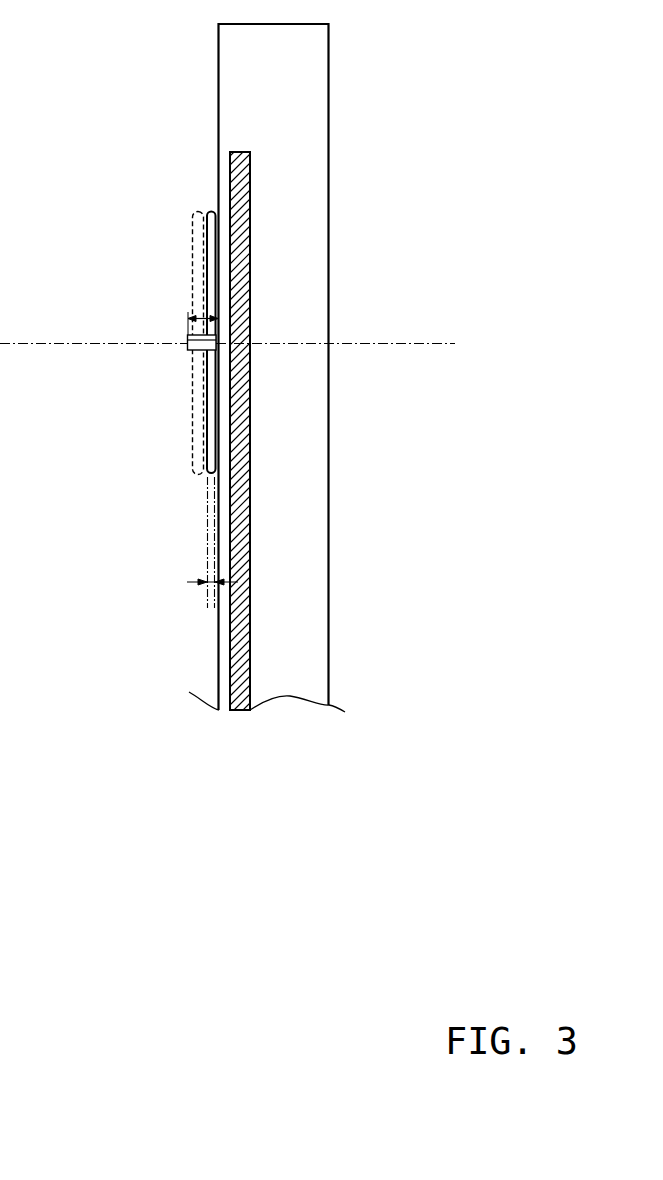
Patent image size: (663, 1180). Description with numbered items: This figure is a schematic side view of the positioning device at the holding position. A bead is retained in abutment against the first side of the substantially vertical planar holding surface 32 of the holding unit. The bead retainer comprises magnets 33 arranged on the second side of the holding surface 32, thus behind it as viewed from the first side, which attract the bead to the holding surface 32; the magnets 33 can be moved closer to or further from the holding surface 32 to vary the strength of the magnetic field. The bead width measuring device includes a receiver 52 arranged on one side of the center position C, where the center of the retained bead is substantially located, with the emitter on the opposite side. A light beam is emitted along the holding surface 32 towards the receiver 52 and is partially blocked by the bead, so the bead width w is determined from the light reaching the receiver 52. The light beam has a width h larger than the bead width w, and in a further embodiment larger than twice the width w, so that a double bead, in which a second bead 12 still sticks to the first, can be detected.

The holding surface 32 is at (218, 87).
The magnets 33 is at (237, 708).
The bead 12 is at (197, 253).
The receiver 52 is at (188, 346).
The center position C is at (44, 344).
The width of the light beam h is at (200, 318).
The width of the bead w is at (208, 606).